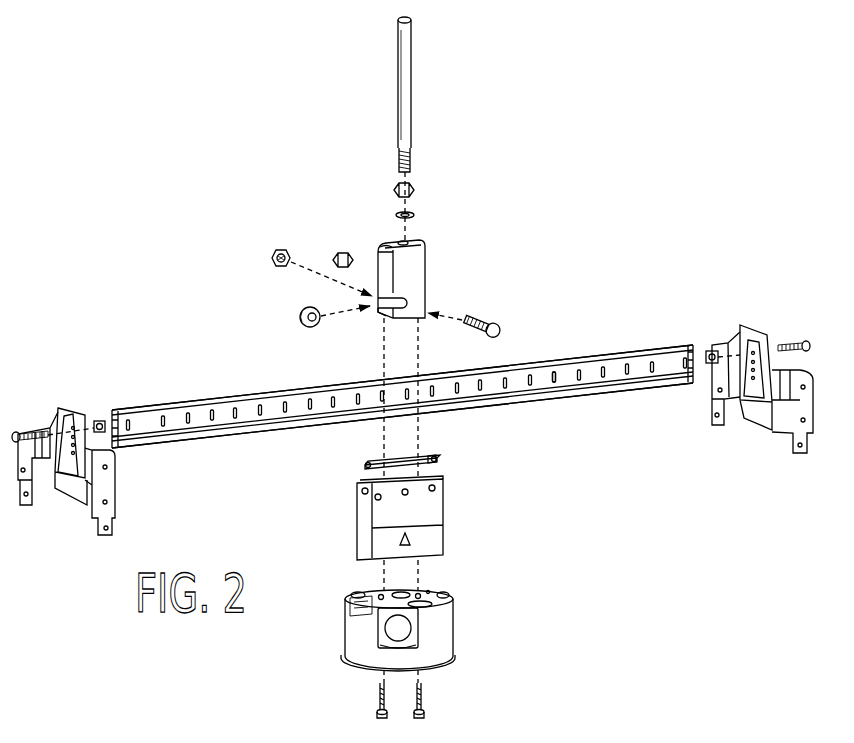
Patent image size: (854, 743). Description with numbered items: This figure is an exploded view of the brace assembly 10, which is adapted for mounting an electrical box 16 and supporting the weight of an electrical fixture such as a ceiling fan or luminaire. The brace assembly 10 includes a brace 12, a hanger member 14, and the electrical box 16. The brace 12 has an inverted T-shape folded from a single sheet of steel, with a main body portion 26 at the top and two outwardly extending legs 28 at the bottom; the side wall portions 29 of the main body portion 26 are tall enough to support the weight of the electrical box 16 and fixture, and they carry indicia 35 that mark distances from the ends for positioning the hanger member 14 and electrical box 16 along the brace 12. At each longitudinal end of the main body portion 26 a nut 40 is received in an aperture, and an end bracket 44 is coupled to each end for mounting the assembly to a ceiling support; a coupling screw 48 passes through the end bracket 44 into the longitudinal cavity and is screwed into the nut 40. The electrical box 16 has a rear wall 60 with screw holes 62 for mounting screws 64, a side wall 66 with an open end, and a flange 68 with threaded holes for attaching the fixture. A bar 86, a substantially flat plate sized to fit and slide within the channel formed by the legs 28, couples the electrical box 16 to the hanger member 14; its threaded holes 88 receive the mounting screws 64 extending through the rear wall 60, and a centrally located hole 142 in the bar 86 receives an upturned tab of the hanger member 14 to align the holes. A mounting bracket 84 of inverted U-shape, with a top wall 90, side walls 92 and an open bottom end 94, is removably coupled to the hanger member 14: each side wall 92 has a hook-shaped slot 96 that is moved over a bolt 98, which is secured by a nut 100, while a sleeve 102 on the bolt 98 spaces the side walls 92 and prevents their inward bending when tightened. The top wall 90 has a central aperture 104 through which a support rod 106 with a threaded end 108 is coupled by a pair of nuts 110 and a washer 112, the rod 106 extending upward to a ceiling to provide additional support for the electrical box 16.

The brace assembly 10 is at (608, 257).
The brace 12 is at (190, 398).
The hanger member 14 is at (447, 528).
The electrical box 16 is at (456, 621).
The main body portion 26 is at (596, 344).
The legs 28 is at (610, 392).
The side wall portions 29 is at (565, 369).
The indicia 35 is at (252, 402).
The nut 40 is at (98, 419).
The end bracket 44 is at (72, 407).
The coupling screw 48 is at (28, 427).
The rear wall 60 is at (408, 592).
The screw holes 62 is at (379, 597).
The mounting screws 64 is at (378, 692).
The side wall 66 is at (440, 640).
The flange 68 is at (345, 660).
The mounting bracket 84 is at (427, 262).
The bar 86 is at (362, 470).
The threaded holes 88 is at (362, 465).
The top wall 90 is at (376, 254).
The side walls 92 is at (416, 277).
The open bottom end 94 is at (378, 312).
The hook-shaped slot 96 is at (376, 303).
The bolt 98 is at (500, 326).
The nut 100 is at (270, 257).
The sleeve 102 is at (299, 317).
The central aperture 104 is at (407, 242).
The support rod 106 is at (397, 73).
The threaded end 108 is at (411, 166).
The nuts 110 is at (392, 190).
The washer 112 is at (416, 213).
The centrally located hole 142 is at (432, 455).